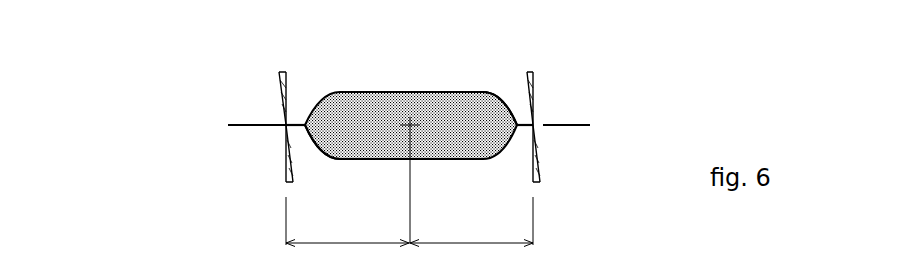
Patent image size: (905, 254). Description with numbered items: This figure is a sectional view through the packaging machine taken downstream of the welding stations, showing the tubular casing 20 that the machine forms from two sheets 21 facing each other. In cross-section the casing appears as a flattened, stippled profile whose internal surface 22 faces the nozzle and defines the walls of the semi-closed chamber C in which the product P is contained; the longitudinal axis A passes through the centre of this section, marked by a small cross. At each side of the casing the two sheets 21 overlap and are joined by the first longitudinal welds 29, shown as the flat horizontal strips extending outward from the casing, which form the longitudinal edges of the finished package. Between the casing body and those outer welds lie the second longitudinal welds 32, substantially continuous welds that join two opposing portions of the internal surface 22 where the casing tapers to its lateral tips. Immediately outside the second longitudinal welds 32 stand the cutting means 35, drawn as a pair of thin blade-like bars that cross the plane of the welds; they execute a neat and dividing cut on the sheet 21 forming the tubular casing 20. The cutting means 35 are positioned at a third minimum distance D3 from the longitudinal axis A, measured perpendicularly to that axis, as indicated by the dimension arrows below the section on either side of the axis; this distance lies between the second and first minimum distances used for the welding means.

The tubular casing 20 is at (364, 90).
The sheet 21 is at (436, 91).
The internal surface 22 is at (443, 159).
The first longitudinal weld 29 is at (237, 123).
The second longitudinal weld 32 is at (297, 128).
The cutting means 35 is at (280, 66).
The longitudinal axis A is at (410, 125).
The semi-closed chamber C is at (473, 112).
The product P is at (398, 142).
The third minimum distance D3 is at (409, 222).